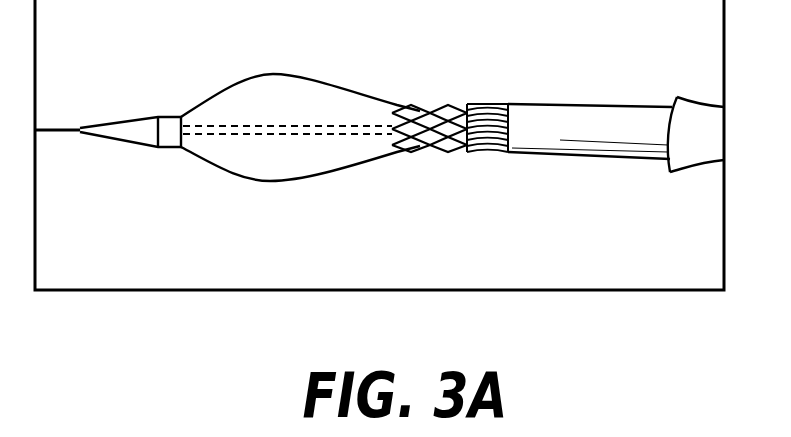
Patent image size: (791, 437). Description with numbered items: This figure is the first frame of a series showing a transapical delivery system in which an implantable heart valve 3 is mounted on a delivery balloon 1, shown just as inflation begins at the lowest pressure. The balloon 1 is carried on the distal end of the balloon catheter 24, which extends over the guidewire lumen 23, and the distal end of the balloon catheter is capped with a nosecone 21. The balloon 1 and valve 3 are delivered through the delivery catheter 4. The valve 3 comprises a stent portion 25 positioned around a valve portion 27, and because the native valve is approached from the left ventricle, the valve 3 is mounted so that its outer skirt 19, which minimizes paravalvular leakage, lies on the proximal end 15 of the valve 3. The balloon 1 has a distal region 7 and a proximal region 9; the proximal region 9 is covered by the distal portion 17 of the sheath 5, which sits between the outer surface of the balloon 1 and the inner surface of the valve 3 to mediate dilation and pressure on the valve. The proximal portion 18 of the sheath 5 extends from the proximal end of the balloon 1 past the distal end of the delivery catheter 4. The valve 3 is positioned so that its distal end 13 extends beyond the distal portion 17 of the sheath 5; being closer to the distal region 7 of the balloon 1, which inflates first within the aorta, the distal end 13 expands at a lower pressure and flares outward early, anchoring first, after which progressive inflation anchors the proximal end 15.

The delivery balloon 1 is at (322, 205).
The implantable heart valve 3 is at (469, 167).
The delivery catheter 4 is at (702, 148).
The sheath 5 is at (585, 180).
The distal region 7 is at (264, 163).
The proximal region 9 is at (546, 143).
The distal end 13 is at (398, 105).
The proximal end 15 is at (466, 104).
The distal portion 17 is at (437, 84).
The proximal portion 18 is at (616, 117).
The outer skirt 19 is at (495, 104).
The nosecone 21 is at (128, 126).
The guidewire lumen 23 is at (59, 128).
The balloon catheter 24 is at (285, 126).
The stent portion 25 is at (407, 148).
The valve portion 27 is at (432, 147).